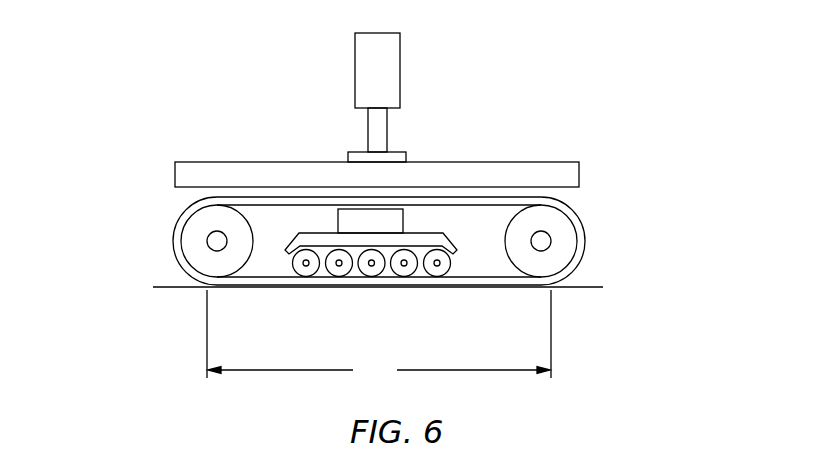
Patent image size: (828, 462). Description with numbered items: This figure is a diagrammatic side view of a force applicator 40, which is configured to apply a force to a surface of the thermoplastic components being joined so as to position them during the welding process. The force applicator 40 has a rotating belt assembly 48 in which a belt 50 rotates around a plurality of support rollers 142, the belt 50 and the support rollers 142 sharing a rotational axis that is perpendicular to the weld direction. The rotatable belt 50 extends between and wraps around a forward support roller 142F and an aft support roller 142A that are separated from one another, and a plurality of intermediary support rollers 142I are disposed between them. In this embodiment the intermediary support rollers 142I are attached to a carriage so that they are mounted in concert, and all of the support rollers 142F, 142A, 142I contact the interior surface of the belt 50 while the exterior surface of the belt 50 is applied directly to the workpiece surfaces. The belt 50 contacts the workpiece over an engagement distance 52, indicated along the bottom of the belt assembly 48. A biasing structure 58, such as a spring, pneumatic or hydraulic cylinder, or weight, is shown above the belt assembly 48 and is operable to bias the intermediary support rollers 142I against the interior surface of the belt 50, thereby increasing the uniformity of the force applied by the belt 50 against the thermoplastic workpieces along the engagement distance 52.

The force applicator 40 is at (417, 115).
The rotating belt assembly 48 is at (369, 252).
The belt 50 is at (586, 243).
The engagement distance 52 is at (379, 338).
The biasing structure 58 is at (390, 70).
The support rollers 142 is at (369, 252).
The aft support roller 142A is at (192, 233).
The forward support roller 142F is at (558, 227).
The intermediary support rollers 142I is at (433, 274).